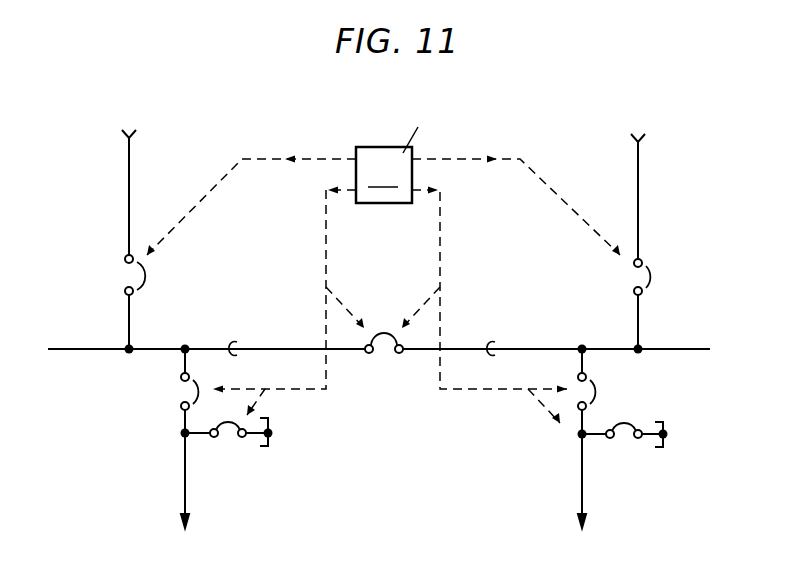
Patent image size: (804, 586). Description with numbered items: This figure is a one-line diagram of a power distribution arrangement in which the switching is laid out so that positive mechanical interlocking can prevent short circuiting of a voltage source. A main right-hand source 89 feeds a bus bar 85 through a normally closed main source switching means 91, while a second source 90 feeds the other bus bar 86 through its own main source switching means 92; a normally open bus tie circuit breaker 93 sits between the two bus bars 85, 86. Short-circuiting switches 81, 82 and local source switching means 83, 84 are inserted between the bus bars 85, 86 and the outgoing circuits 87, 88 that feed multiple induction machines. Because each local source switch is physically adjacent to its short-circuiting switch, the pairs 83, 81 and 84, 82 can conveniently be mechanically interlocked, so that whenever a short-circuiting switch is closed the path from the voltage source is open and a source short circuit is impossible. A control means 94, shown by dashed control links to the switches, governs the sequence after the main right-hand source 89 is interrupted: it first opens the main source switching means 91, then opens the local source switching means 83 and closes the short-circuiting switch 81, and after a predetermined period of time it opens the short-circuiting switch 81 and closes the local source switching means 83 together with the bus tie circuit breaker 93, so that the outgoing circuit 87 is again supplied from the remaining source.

The short-circuiting switch 81 is at (622, 445).
The short-circuiting switch 82 is at (226, 442).
The local source switching means 83 is at (604, 391).
The local source switching means 84 is at (174, 391).
The bus bar 85 is at (511, 333).
The bus bar 86 is at (252, 333).
The outgoing circuit 87 is at (596, 481).
The outgoing circuit 88 is at (201, 480).
The main right-hand source 89 is at (638, 184).
The voltage source 90 is at (129, 179).
The main source switching means 91 is at (639, 304).
The main source switching means 92 is at (143, 302).
The bus tie circuit breaker 93 is at (386, 341).
The control means 94 is at (383, 254).